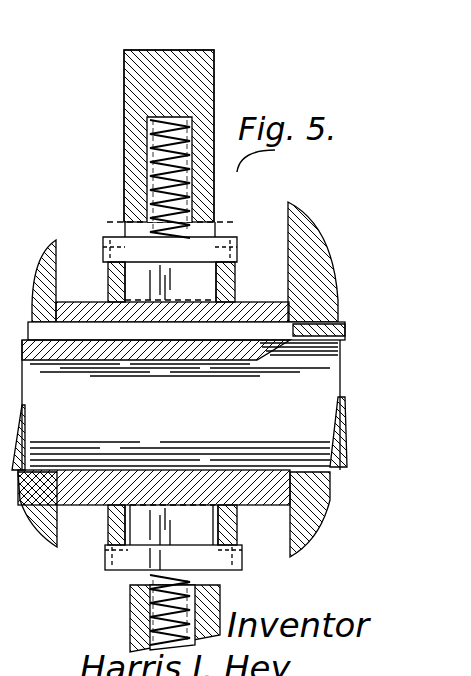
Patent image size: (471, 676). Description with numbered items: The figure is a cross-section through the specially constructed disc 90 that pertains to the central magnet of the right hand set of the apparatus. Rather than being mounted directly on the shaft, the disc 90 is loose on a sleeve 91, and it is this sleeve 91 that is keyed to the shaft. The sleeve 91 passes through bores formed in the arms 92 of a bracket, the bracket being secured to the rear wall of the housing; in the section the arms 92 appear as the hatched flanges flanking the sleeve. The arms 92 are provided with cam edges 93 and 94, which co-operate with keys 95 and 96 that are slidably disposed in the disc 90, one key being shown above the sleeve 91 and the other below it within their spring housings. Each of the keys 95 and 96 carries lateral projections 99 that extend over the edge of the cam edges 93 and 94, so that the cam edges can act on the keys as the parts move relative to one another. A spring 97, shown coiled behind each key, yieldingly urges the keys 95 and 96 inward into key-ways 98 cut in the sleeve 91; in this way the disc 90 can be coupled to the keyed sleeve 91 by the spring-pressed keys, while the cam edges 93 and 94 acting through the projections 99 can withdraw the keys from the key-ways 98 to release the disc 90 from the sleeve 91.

The disc 90 is at (117, 164).
The sleeve 91 is at (265, 283).
The arms 92 is at (108, 287).
The cam edge 93 is at (107, 272).
The cam edge 94 is at (238, 547).
The key 95 is at (203, 243).
The key 96 is at (157, 552).
The spring 97 is at (170, 173).
The key-ways 98 is at (218, 305).
The lateral projections 99 is at (110, 235).